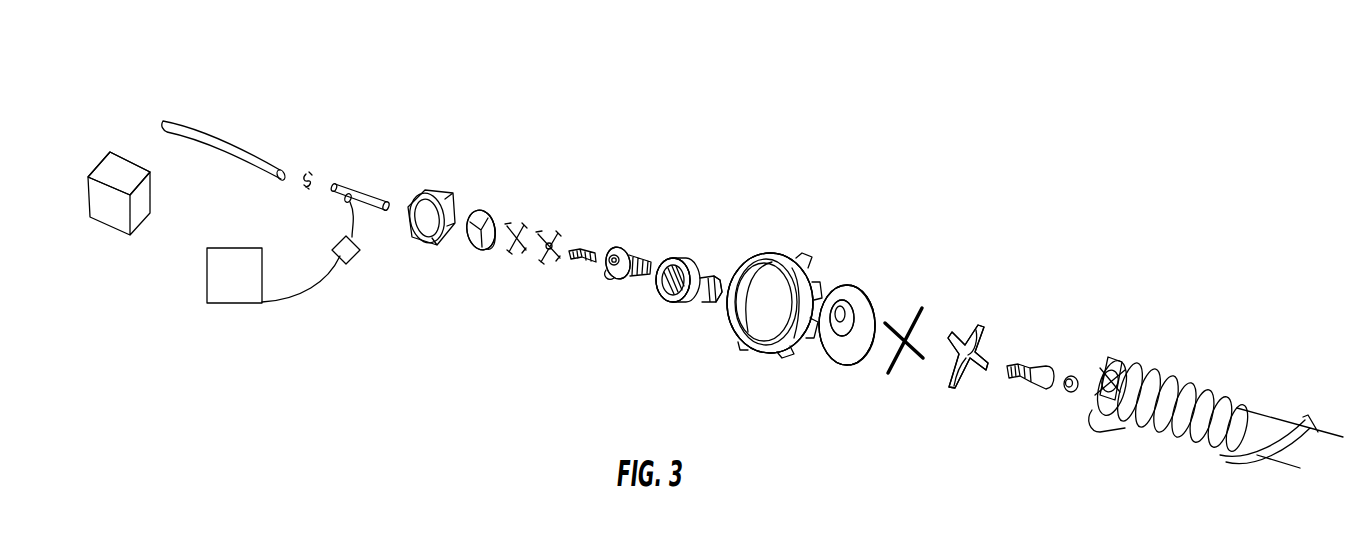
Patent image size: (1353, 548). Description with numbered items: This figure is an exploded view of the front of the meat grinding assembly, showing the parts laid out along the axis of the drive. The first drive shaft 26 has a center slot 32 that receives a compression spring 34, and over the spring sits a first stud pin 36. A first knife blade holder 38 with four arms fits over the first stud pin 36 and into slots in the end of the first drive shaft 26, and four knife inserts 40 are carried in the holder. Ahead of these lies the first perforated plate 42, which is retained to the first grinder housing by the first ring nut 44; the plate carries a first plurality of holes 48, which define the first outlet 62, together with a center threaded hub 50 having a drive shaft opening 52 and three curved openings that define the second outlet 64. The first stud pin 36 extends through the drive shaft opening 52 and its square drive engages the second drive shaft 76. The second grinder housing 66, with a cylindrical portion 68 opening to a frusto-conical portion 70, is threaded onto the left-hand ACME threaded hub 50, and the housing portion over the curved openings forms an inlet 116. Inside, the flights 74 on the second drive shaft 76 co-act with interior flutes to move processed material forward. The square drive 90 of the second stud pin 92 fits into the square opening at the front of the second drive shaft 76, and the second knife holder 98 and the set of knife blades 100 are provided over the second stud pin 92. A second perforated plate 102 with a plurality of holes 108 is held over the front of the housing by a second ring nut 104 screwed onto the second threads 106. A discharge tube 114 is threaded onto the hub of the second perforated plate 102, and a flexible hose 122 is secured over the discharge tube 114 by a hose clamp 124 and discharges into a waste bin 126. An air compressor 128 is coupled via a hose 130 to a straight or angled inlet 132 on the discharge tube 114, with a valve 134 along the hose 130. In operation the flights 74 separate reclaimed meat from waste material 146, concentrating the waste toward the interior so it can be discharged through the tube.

The first drive shaft 26 is at (1240, 380).
The center slot 32 is at (1082, 406).
The compression spring 34 is at (1079, 368).
The first stud pin 36 is at (1019, 388).
The first knife blade holder 38 is at (997, 317).
The knife inserts 40 is at (930, 317).
The first perforated plate 42 is at (826, 373).
The first ring nut 44 is at (812, 240).
The holes 48 is at (840, 305).
The center threaded hub 50 is at (865, 311).
The drive shaft opening 52 is at (858, 358).
The first outlet 62 is at (820, 347).
The second outlet 64 is at (866, 304).
The second grinder housing 66 is at (733, 256).
The cylindrical portion 68 is at (702, 303).
The frusto-conical portion 70 is at (663, 296).
The flights 74 is at (630, 246).
The second drive shaft 76 is at (667, 259).
The square drive 90 is at (591, 268).
The second stud pin 92 is at (589, 241).
The second knife holder 98 is at (536, 260).
The set of knife blades 100 is at (534, 209).
The second perforated plate 102 is at (466, 252).
The second ring nut 104 is at (457, 181).
The second threads 106 is at (706, 258).
The holes 108 is at (483, 209).
The discharge tube 114 is at (371, 179).
The inlet 116 is at (728, 328).
The flexible hose 122 is at (270, 166).
The hose clamp 124 is at (314, 166).
The waste bin 126 is at (131, 237).
The air compressor 128 is at (233, 304).
The hose 130 is at (324, 280).
The inlet 132 is at (342, 196).
The valve 134 is at (357, 263).
The waste material 146 is at (143, 143).